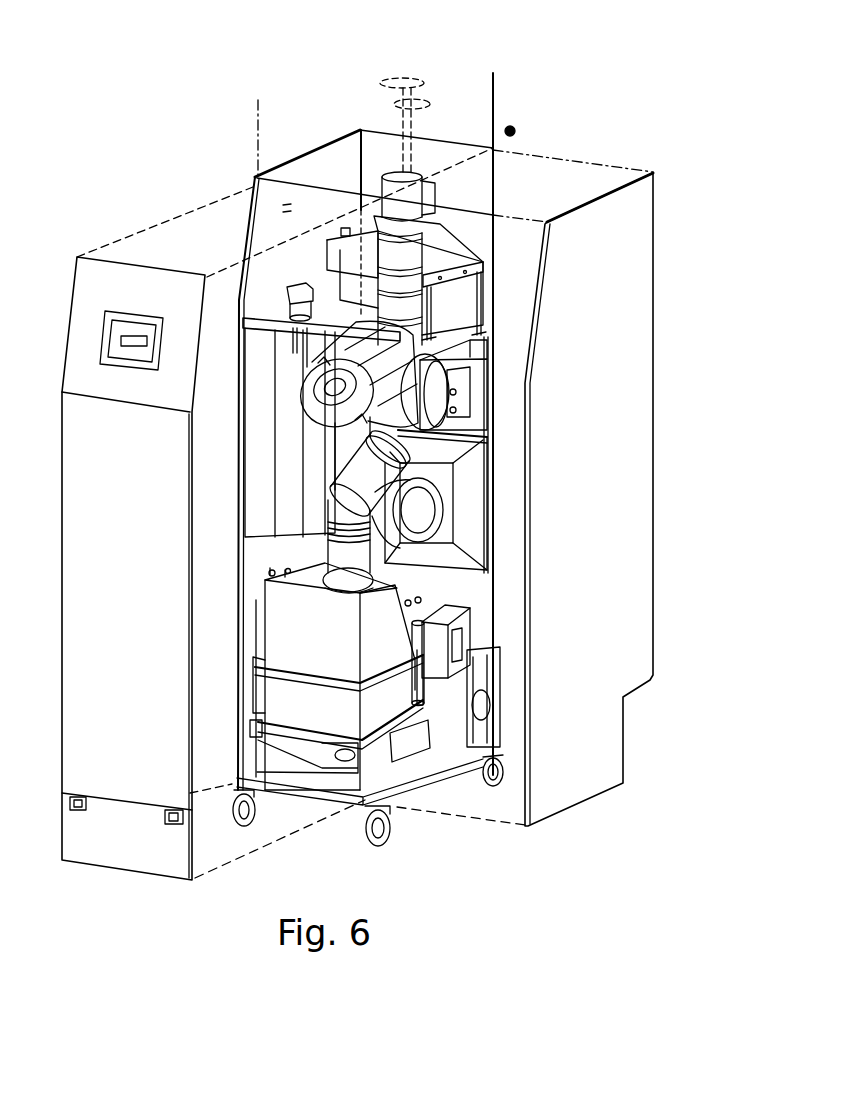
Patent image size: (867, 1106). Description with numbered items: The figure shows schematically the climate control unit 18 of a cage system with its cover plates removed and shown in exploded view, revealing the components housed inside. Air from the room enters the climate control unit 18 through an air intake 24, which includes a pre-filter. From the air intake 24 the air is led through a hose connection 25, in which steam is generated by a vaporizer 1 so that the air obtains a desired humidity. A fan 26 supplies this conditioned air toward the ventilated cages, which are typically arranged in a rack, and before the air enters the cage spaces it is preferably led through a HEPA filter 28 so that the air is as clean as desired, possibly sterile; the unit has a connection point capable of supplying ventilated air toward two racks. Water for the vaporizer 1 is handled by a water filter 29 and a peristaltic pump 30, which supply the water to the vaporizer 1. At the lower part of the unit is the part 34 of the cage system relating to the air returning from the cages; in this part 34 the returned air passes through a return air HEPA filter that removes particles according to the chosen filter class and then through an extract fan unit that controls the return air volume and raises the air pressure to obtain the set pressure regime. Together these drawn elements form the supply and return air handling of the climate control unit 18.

The climate control unit 18 is at (180, 67).
The HEPA filter 28 is at (447, 252).
The peristaltic pump 30 is at (290, 290).
The water filter 29 is at (287, 357).
The vaporizer 1 is at (520, 383).
The fan 26 is at (403, 402).
The hose connection 25 is at (470, 374).
The air intake 24 is at (460, 512).
The return air part 34 is at (444, 801).